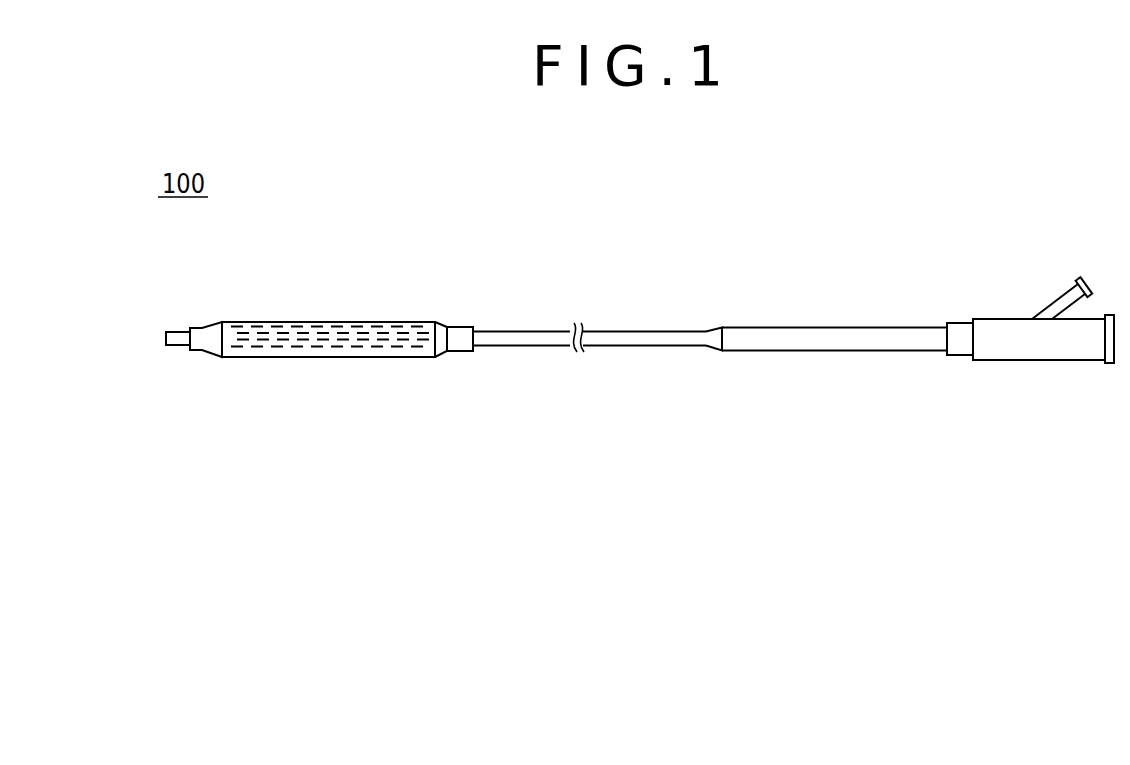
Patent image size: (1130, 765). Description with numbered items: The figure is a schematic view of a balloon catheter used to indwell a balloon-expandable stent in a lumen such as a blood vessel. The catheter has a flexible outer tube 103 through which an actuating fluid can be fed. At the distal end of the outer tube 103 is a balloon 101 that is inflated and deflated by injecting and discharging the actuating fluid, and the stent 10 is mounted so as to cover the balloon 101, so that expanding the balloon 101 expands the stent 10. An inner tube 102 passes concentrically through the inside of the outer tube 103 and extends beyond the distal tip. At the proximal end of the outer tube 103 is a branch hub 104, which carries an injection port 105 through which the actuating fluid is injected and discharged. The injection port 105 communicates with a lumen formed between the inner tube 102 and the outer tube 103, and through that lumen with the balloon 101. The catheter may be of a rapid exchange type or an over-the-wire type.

The stent 10 is at (309, 321).
The balloon 101 is at (213, 333).
The inner tube 102 is at (177, 347).
The outer tube 103 is at (637, 339).
The branch hub 104 is at (1002, 348).
The injection port 105 is at (1088, 278).